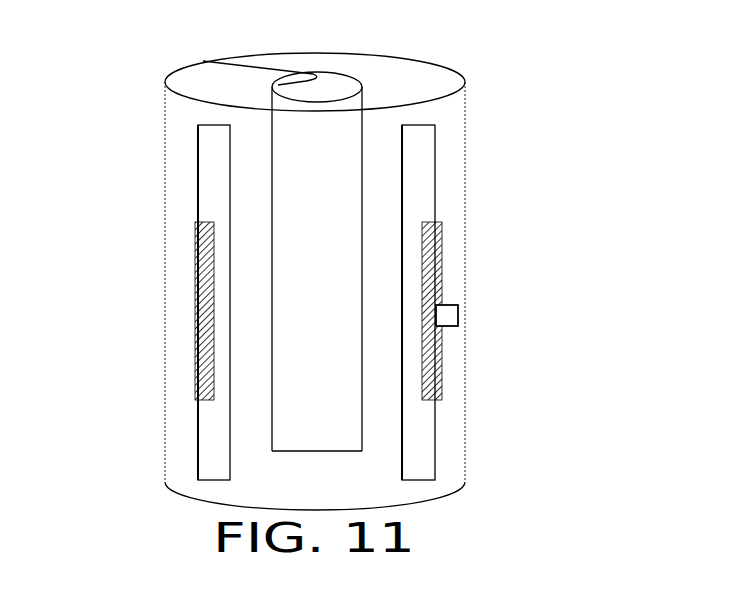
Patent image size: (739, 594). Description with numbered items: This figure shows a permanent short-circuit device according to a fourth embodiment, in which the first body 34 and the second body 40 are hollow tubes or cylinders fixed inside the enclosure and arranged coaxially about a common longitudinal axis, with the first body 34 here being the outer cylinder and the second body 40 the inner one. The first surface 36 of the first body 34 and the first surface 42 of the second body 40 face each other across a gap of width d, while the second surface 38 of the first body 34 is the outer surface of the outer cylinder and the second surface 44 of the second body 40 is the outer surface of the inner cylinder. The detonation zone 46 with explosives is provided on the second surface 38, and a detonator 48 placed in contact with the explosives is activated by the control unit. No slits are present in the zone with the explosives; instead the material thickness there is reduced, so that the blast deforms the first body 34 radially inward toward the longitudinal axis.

The first body 34 is at (212, 167).
The first surface of the first body 36 is at (407, 190).
The second surface of the first body 38 is at (435, 418).
The second body 40 is at (315, 127).
The first surface of the second body 42 is at (268, 185).
The second surface of the second body 44 is at (239, 50).
The detonation zone with explosives 46 is at (202, 303).
The detonator 48 is at (458, 320).